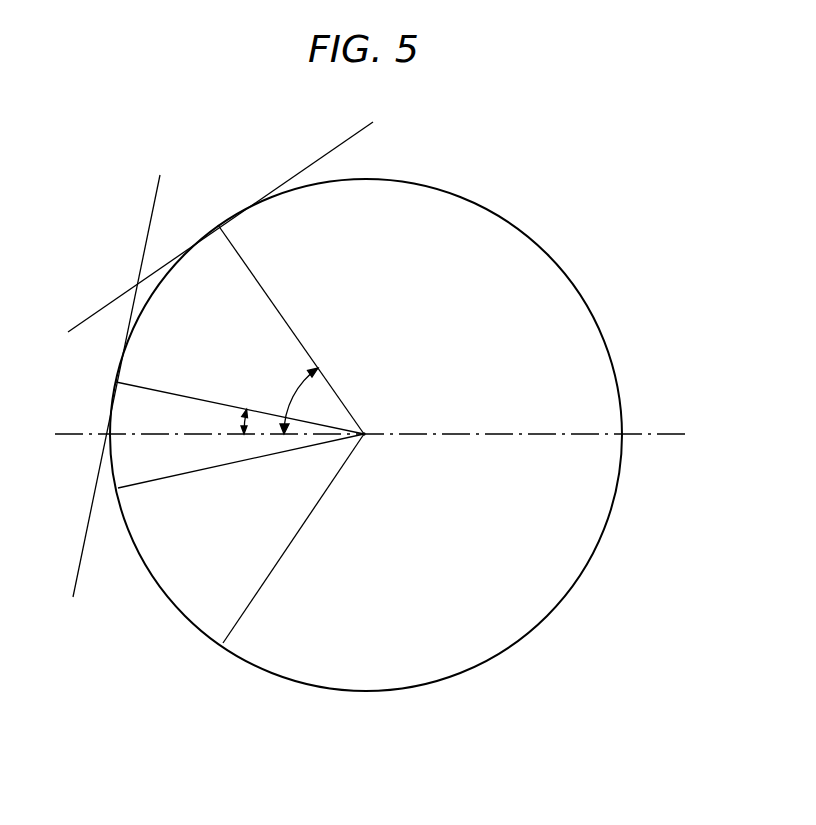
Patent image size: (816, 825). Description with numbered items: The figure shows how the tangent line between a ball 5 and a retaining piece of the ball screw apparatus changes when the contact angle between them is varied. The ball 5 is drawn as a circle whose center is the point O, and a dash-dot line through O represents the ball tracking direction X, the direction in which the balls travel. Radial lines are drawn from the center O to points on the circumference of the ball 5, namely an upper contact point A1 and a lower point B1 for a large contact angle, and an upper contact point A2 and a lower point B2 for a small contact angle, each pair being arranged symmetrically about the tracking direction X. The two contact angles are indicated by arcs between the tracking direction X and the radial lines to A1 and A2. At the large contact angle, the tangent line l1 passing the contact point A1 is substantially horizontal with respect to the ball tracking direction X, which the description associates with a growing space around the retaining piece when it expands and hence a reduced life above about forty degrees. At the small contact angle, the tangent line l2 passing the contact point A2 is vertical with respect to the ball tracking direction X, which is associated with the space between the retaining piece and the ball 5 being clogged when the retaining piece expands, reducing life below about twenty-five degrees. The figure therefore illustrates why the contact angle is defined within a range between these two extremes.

The ball 5 is at (528, 252).
The ball tracking direction X is at (668, 428).
The center O is at (373, 447).
The tangent line l1 is at (229, 221).
The tangent line l2 is at (118, 373).
The contact point A1 is at (281, 317).
The contact point A2 is at (225, 402).
The point B1 is at (282, 552).
The point B2 is at (229, 475).